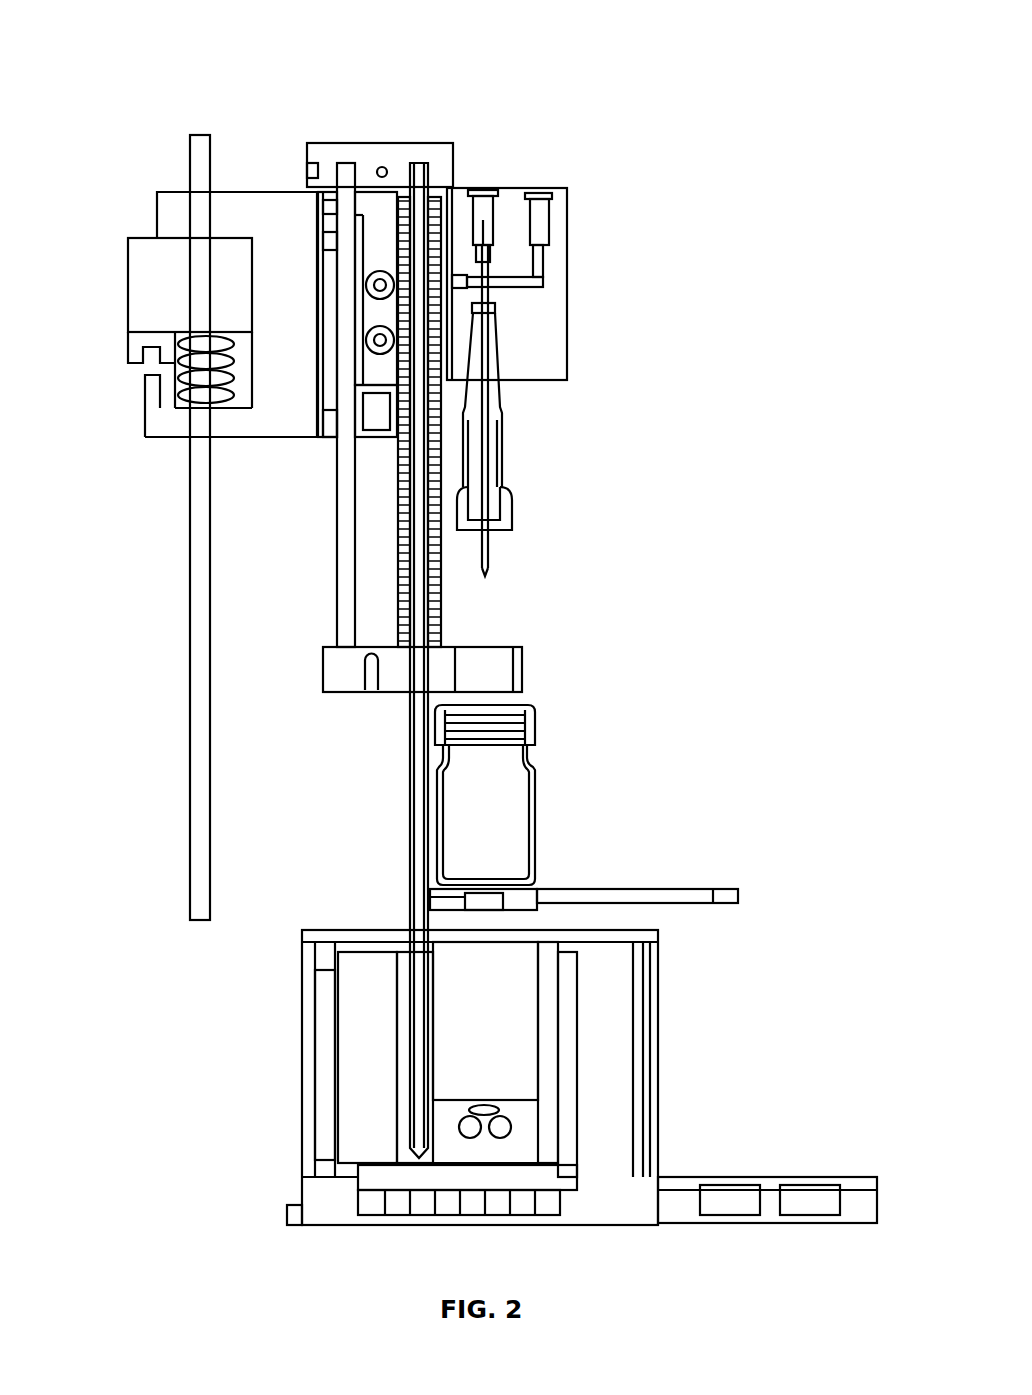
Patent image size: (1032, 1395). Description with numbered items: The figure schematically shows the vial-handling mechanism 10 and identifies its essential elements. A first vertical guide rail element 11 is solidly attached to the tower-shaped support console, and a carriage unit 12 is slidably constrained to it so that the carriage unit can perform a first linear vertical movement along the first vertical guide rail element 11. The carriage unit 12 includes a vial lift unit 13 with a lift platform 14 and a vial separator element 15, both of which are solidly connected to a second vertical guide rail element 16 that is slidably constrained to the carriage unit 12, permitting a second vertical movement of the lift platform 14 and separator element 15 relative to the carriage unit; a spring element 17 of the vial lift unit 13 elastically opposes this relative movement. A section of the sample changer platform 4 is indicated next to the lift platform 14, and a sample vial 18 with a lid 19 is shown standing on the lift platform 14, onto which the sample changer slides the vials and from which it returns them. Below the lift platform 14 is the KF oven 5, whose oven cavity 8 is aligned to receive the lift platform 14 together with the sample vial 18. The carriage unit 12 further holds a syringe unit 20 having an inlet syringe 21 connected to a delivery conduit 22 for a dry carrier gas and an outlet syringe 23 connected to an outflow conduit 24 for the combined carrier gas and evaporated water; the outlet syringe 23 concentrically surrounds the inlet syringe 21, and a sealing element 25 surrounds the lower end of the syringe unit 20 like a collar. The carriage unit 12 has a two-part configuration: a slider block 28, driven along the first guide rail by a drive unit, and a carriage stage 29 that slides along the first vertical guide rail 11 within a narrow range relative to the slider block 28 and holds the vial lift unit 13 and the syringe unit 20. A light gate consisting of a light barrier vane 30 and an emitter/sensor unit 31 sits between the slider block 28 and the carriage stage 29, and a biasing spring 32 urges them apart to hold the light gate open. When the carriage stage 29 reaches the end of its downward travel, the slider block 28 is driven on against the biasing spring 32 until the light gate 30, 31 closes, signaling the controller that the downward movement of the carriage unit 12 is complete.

The vial-handling mechanism 10 is at (716, 139).
The sample changer platform 4 is at (680, 897).
The KF oven 5 is at (317, 1060).
The oven cavity 8 is at (493, 1025).
The first vertical guide rail element 11 is at (200, 615).
The carriage unit 12 is at (628, 312).
The vial lift unit 13 is at (378, 215).
The lift platform 14 is at (527, 895).
The vial separator element 15 is at (497, 665).
The second vertical guide rail element 16 is at (415, 778).
The spring element 17 is at (437, 607).
The sample vial 18 is at (497, 808).
The lid 19 is at (527, 707).
The syringe unit 20 is at (512, 207).
The inlet syringe 21 is at (486, 572).
The delivery conduit 22 is at (493, 232).
The outlet syringe 23 is at (673, 430).
The outflow conduit 24 is at (558, 213).
The sealing element 25 is at (512, 510).
The slider block 28 is at (174, 287).
The carriage stage 29 is at (210, 210).
The light barrier vane 30 is at (145, 397).
The emitter/sensor unit 31 is at (128, 347).
The biasing spring 32 is at (203, 385).